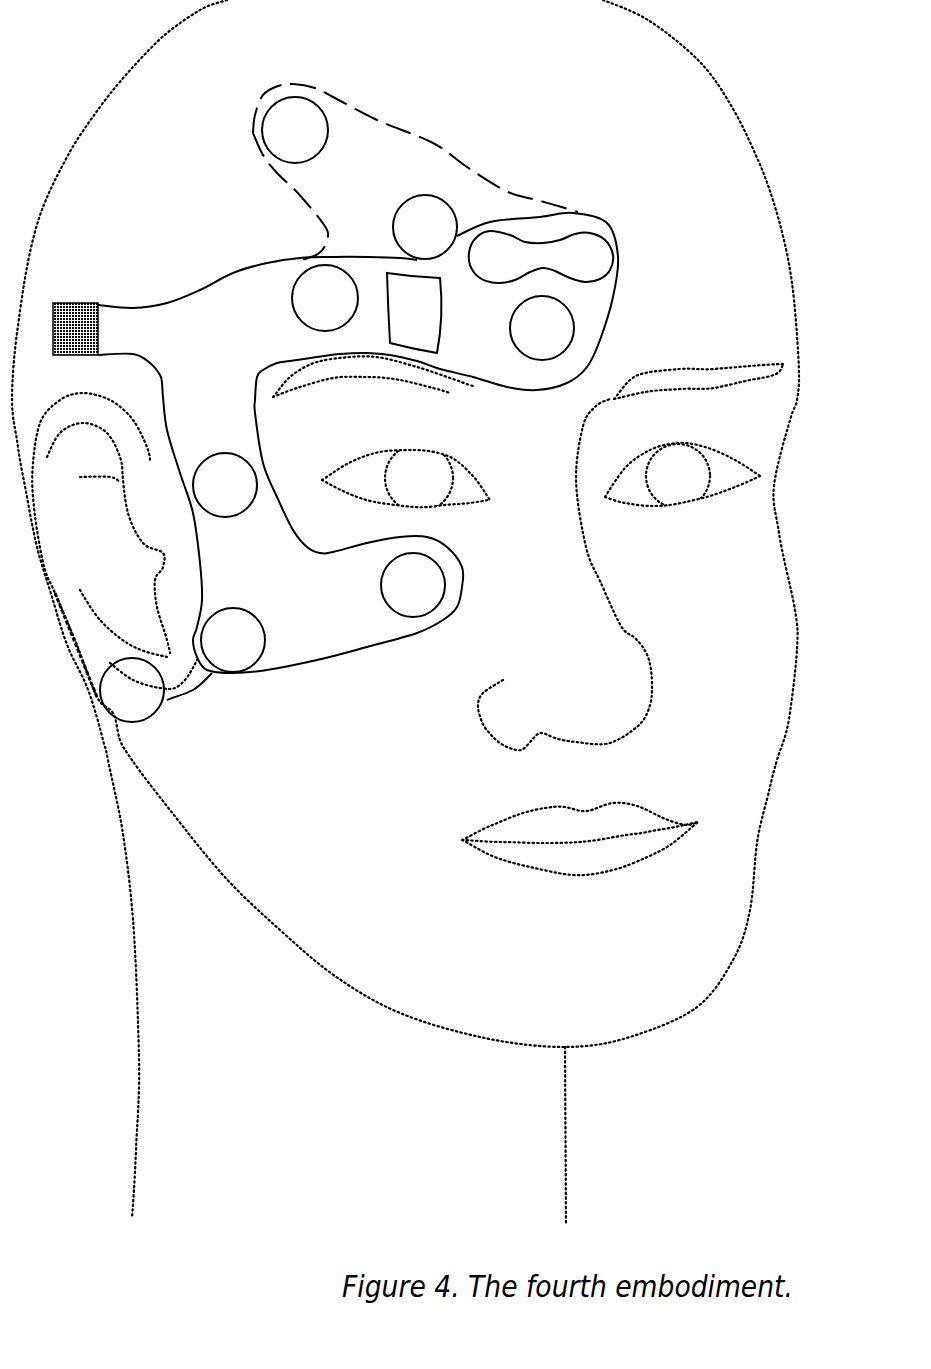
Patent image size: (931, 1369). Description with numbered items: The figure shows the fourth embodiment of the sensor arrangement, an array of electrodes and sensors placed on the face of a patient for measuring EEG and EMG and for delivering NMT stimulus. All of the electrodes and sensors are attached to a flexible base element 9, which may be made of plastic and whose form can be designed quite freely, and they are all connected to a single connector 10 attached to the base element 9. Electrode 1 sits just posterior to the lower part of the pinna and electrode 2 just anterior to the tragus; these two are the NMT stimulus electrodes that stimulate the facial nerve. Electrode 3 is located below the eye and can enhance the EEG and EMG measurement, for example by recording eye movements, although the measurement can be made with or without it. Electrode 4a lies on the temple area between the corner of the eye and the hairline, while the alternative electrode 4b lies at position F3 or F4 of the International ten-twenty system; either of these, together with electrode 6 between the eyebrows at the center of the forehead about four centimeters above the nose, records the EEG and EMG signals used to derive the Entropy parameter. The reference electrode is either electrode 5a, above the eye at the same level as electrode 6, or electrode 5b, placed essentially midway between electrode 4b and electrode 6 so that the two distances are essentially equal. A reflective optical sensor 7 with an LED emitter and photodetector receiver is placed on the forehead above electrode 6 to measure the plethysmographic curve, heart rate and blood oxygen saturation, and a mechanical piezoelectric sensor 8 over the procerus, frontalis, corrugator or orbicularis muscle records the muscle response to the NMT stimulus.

The electrode 1 is at (132, 690).
The electrode 2 is at (233, 640).
The electrode 3 is at (413, 585).
The electrode 4a is at (225, 485).
The electrode 4b is at (415, 172).
The electrode 5a is at (325, 298).
The electrode 5b is at (425, 227).
The electrode 6 is at (542, 328).
The reflective optical sensor 7 is at (541, 257).
The mechanical piezoelectric sensor 8 is at (414, 313).
The base element 9 is at (313, 615).
The connector 10 is at (72, 323).